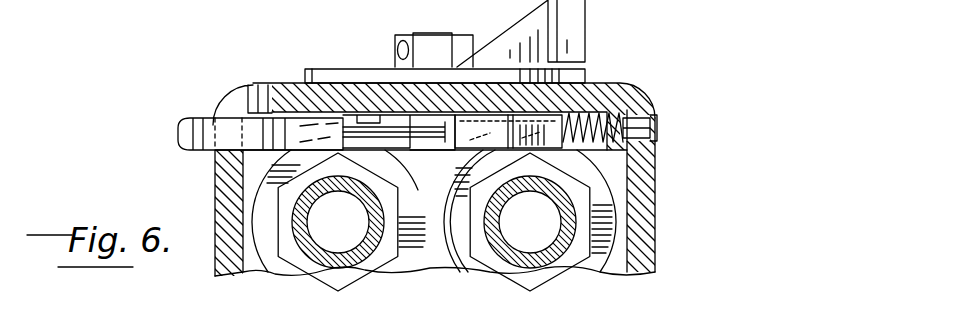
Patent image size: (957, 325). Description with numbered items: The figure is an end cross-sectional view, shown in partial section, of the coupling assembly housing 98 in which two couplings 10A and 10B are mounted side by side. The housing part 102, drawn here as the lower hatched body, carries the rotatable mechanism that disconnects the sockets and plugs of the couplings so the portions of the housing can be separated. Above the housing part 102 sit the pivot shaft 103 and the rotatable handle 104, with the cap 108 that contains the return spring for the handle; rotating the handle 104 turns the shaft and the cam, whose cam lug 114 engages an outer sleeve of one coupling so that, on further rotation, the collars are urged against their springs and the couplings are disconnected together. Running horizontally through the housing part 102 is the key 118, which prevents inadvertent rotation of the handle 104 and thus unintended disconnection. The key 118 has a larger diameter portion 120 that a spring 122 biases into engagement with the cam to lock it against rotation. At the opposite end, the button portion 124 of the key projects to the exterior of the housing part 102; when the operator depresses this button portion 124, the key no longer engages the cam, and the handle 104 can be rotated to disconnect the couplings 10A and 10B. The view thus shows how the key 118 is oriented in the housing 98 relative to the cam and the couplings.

The housing 98 is at (666, 200).
The coupling 10A is at (605, 181).
The coupling 10B is at (270, 206).
The lower housing part 102 is at (287, 82).
The pivot shaft 103 is at (417, 33).
The rotatable handle 104 is at (585, 17).
The cap 108 is at (352, 67).
The cam lug 114 is at (437, 195).
The key 118 is at (251, 108).
The larger diameter portion 120 is at (547, 117).
The spring 122 is at (557, 135).
The button portion 124 is at (178, 124).